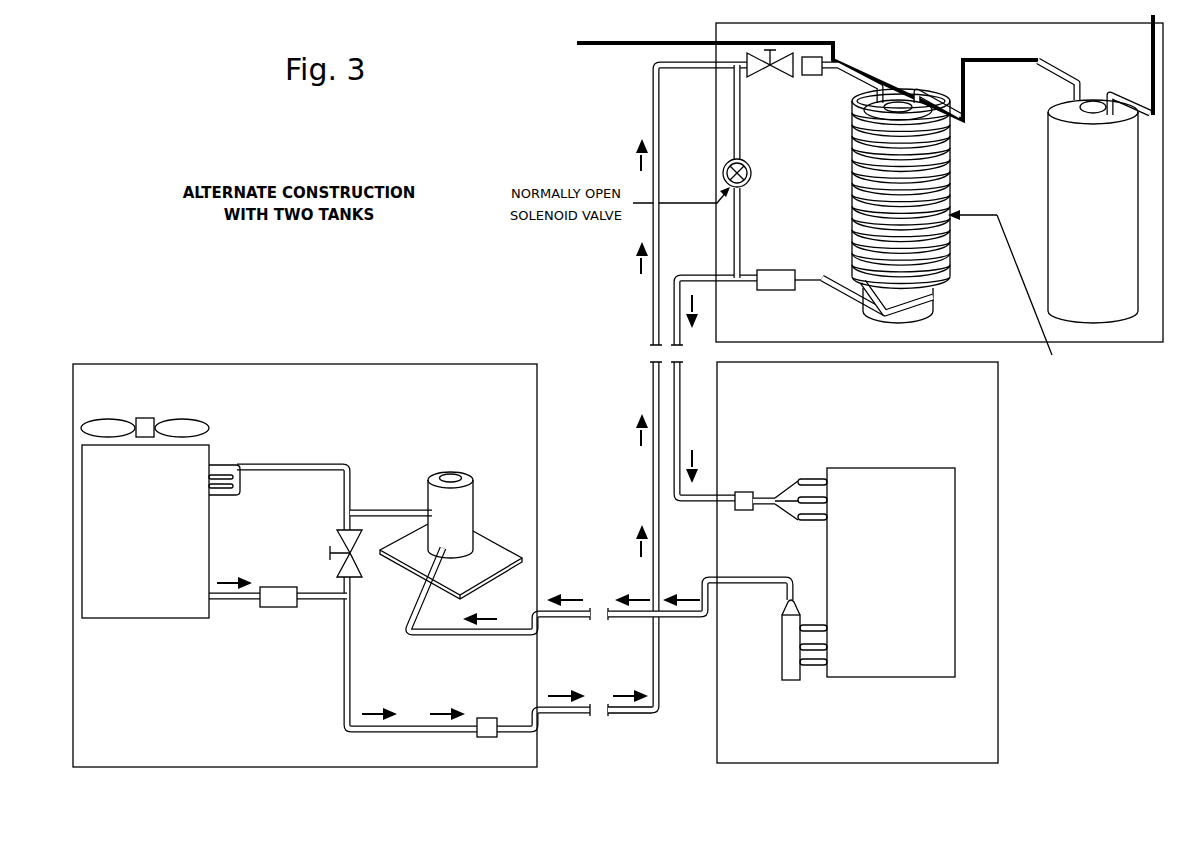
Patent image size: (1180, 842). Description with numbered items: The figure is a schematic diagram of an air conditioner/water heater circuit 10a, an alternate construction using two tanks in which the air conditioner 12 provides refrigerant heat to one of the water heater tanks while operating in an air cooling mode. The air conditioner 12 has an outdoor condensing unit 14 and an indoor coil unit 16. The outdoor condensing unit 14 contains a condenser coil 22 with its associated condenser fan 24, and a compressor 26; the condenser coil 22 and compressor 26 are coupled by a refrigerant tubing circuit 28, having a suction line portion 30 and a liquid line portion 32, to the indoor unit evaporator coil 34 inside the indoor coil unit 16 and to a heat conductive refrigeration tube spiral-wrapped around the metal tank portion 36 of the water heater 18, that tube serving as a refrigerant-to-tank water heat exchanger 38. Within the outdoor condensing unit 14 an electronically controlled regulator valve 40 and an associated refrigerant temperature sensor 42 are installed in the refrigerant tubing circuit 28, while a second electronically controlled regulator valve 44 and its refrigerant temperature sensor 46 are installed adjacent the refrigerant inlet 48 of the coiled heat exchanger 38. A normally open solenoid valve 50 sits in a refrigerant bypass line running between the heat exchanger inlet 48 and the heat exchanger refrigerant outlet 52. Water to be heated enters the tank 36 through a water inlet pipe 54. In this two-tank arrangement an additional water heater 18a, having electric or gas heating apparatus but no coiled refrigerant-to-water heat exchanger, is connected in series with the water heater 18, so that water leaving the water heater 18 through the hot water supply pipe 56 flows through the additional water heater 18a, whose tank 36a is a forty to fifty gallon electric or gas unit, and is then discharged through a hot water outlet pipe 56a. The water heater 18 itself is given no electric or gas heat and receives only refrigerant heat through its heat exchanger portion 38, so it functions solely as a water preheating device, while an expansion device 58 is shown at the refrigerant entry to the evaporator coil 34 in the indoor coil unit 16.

The air conditioner/water heater circuit 10a is at (160, 347).
The air conditioner 12 is at (1016, 698).
The outdoor condensing unit 14 is at (293, 426).
The indoor coil unit 16 is at (847, 441).
The water heater 18 is at (845, 180).
The additional water heater 18a is at (1041, 160).
The condenser coil 22 is at (135, 543).
The condenser fan 24 is at (108, 419).
The compressor 26 is at (475, 522).
The refrigerant tubing circuit 28 is at (633, 718).
The suction line portion 30 is at (570, 618).
The liquid line portion 32 is at (652, 108).
The indoor unit evaporator coil 34 is at (880, 585).
The metal tank portion 36 is at (905, 322).
The water heater tank (40 to 50 gallon electric or gas) 36a is at (1078, 306).
The refrigerant-to-tank water heat exchanger 38 is at (950, 203).
The electronically controlled regulator valve 40 is at (340, 545).
The refrigerant temperature sensor 42 is at (487, 718).
The electronically controlled regulator valve 44 is at (770, 78).
The refrigerant temperature sensor 46 is at (812, 78).
The refrigerant inlet 48 is at (836, 72).
The normally open solenoid valve 50 is at (745, 185).
The heat exchanger refrigerant outlet 52 is at (818, 273).
The water inlet pipe 54 is at (584, 48).
The hot water supply pipe 56 is at (1000, 62).
The hot water outlet pipe 56a is at (1150, 80).
The expansion device 58 is at (745, 515).